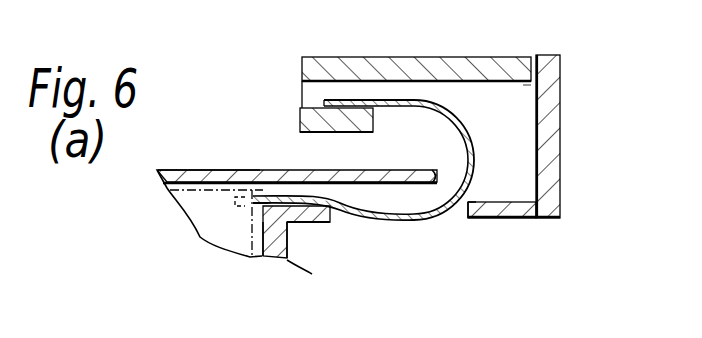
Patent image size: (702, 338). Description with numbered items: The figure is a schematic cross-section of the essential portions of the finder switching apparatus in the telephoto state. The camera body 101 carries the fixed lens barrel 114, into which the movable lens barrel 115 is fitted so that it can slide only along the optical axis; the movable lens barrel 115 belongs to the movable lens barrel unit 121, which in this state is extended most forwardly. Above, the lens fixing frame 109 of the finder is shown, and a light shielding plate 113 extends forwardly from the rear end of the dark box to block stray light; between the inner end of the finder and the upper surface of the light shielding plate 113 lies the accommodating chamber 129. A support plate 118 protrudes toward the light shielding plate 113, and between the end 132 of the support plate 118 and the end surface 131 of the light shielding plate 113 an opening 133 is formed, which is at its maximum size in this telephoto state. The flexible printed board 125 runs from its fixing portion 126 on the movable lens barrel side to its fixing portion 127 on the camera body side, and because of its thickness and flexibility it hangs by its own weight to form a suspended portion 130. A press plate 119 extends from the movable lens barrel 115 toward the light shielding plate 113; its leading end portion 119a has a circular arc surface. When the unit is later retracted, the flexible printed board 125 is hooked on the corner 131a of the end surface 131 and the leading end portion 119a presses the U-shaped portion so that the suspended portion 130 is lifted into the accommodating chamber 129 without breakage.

The camera body 101 is at (563, 145).
The lens fixing frame 109 is at (460, 57).
The light shielding plate 113 is at (543, 220).
The fixed lens barrel 114 is at (300, 132).
The movable lens barrel 115 is at (205, 170).
The support plate 118 is at (310, 222).
The press plate 119 is at (343, 170).
The leading end portion of press plate 119a is at (442, 170).
The movable lens barrel unit 121 is at (193, 240).
The flexible film-like printed board (FPC) 125 is at (468, 128).
The fixing portion of FPC on movable lens barrel side 126 is at (243, 200).
The fixing portion of FPC on camera body side 127 is at (356, 100).
The accommodating chamber 129 is at (523, 87).
The suspended portion of FPC 130 is at (420, 220).
The end surface of light shielding plate 131 is at (468, 213).
The corner of end surface 131a is at (473, 200).
The end of support plate 132 is at (337, 222).
The opening 133 is at (348, 215).